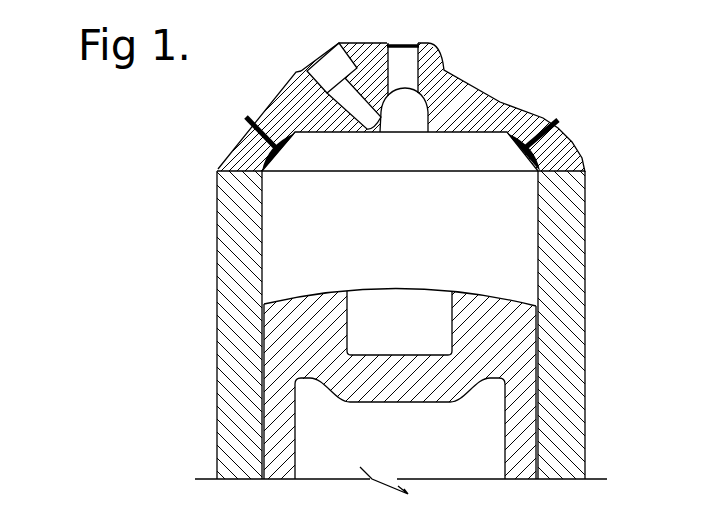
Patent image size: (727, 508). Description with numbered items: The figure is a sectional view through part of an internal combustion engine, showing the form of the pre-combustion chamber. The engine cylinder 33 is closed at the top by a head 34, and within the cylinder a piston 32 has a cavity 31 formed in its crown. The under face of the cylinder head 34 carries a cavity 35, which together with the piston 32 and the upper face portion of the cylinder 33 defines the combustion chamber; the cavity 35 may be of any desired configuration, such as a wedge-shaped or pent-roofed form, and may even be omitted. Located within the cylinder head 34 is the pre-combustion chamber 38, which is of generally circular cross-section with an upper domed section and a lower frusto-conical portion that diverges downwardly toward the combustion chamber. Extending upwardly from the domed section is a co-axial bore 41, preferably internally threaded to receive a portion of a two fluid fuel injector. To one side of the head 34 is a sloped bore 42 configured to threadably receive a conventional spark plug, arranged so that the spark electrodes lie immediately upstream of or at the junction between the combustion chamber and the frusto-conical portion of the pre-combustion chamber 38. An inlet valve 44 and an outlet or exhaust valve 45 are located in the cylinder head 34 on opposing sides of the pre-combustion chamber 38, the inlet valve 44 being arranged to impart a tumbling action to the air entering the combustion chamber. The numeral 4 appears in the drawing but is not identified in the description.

The engine block base 4 is at (391, 487).
The cavity 31 is at (367, 338).
The piston 32 is at (518, 402).
The engine cylinder 33 is at (262, 249).
The head 34 is at (522, 110).
The cavity 35 is at (499, 162).
The pre-combustion chamber 38 is at (413, 107).
The co-axial bore 41 is at (400, 72).
The sloped bore 42 is at (327, 77).
The inlet valve 44 is at (247, 120).
The outlet or exhaust valve 45 is at (560, 127).